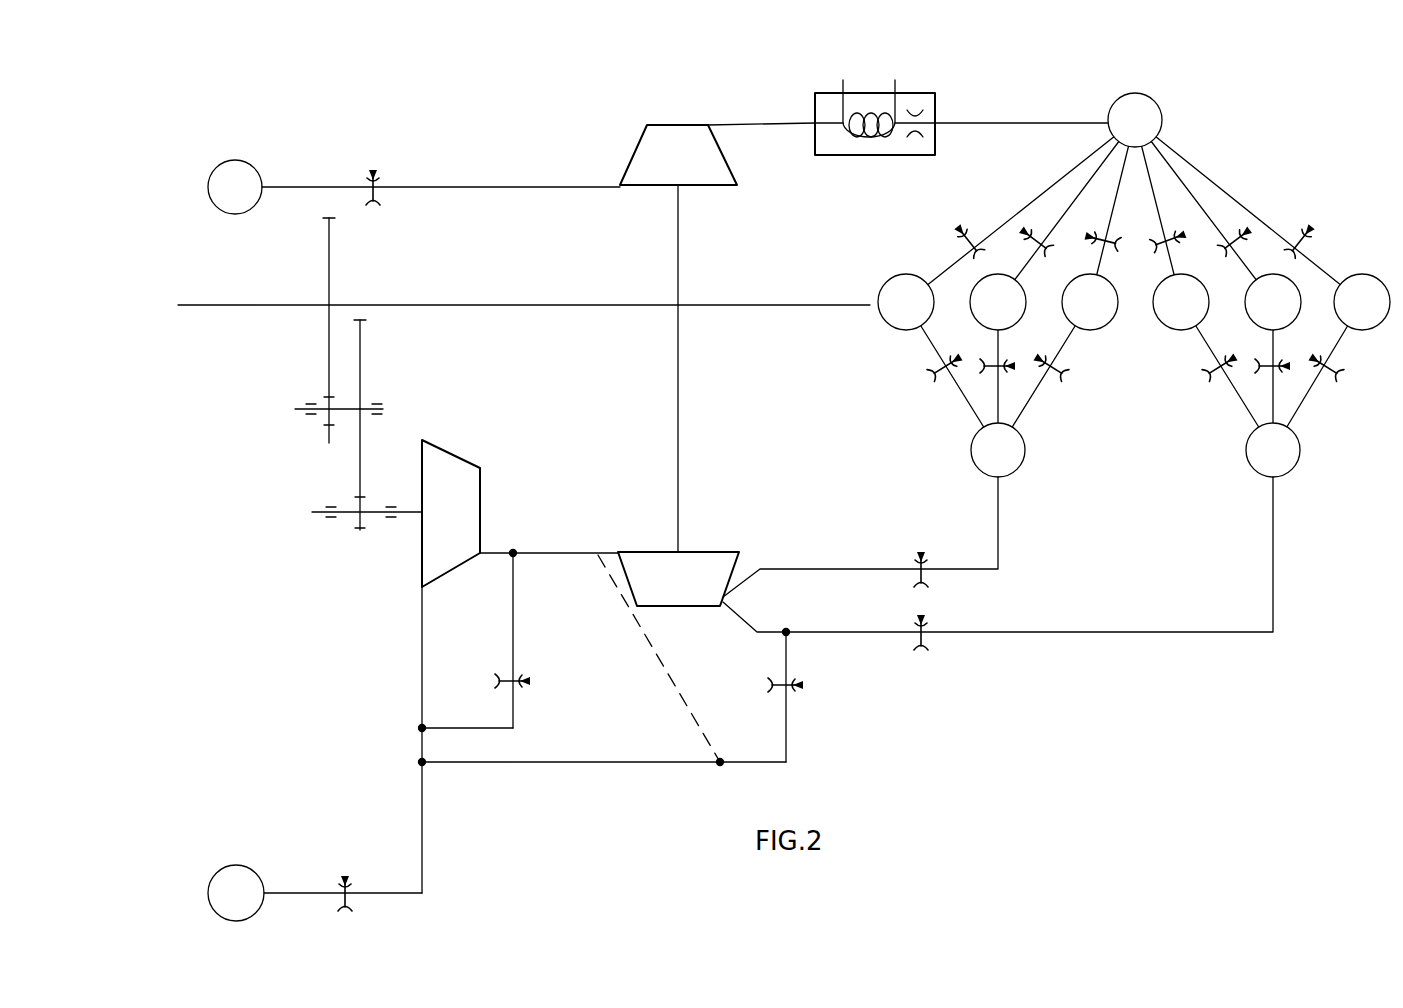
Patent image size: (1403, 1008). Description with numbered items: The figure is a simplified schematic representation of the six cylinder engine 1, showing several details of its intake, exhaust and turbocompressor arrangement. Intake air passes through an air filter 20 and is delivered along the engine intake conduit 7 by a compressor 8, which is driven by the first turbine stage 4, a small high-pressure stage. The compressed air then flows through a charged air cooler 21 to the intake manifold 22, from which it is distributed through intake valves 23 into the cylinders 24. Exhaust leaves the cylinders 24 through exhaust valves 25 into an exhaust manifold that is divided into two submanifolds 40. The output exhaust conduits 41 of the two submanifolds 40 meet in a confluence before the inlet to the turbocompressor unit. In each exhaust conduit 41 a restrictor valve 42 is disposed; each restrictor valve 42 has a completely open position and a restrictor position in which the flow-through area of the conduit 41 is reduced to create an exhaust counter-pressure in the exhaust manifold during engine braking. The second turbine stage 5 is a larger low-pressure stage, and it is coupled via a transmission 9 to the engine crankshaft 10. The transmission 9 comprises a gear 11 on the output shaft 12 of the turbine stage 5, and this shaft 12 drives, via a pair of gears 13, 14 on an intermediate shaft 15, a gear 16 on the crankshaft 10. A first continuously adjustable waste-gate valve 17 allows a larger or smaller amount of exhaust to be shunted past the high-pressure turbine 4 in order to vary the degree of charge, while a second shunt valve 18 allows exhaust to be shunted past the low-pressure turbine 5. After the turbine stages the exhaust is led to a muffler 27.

The six cylinder engine 1 is at (1210, 158).
The first turbine stage 4 is at (699, 552).
The second turbine stage 5 is at (483, 512).
The engine intake conduit 7 is at (978, 126).
The compressor 8 is at (735, 186).
The transmission 9 is at (318, 460).
The engine crankshaft 10 is at (488, 306).
The gear 11 is at (358, 534).
The output shaft 12 is at (410, 514).
The gear 13 is at (364, 458).
The gear 14 is at (326, 430).
The intermediate shaft 15 is at (362, 408).
The gear 16 is at (328, 364).
The first continuously adjustable waste-gate valve 17 is at (796, 686).
The second shunt valve 18 is at (506, 680).
The air filter 20 is at (376, 182).
The charged air cooler 21 is at (920, 93).
The intake manifold 22 is at (1143, 100).
The intake valves 23 is at (964, 238).
The cylinders 24 is at (884, 322).
The exhaust valves 25 is at (940, 372).
The muffler 27 is at (350, 882).
The submanifolds 40 is at (972, 444).
The output exhaust conduits 41 is at (818, 572).
The restrictor valve 42 is at (932, 562).